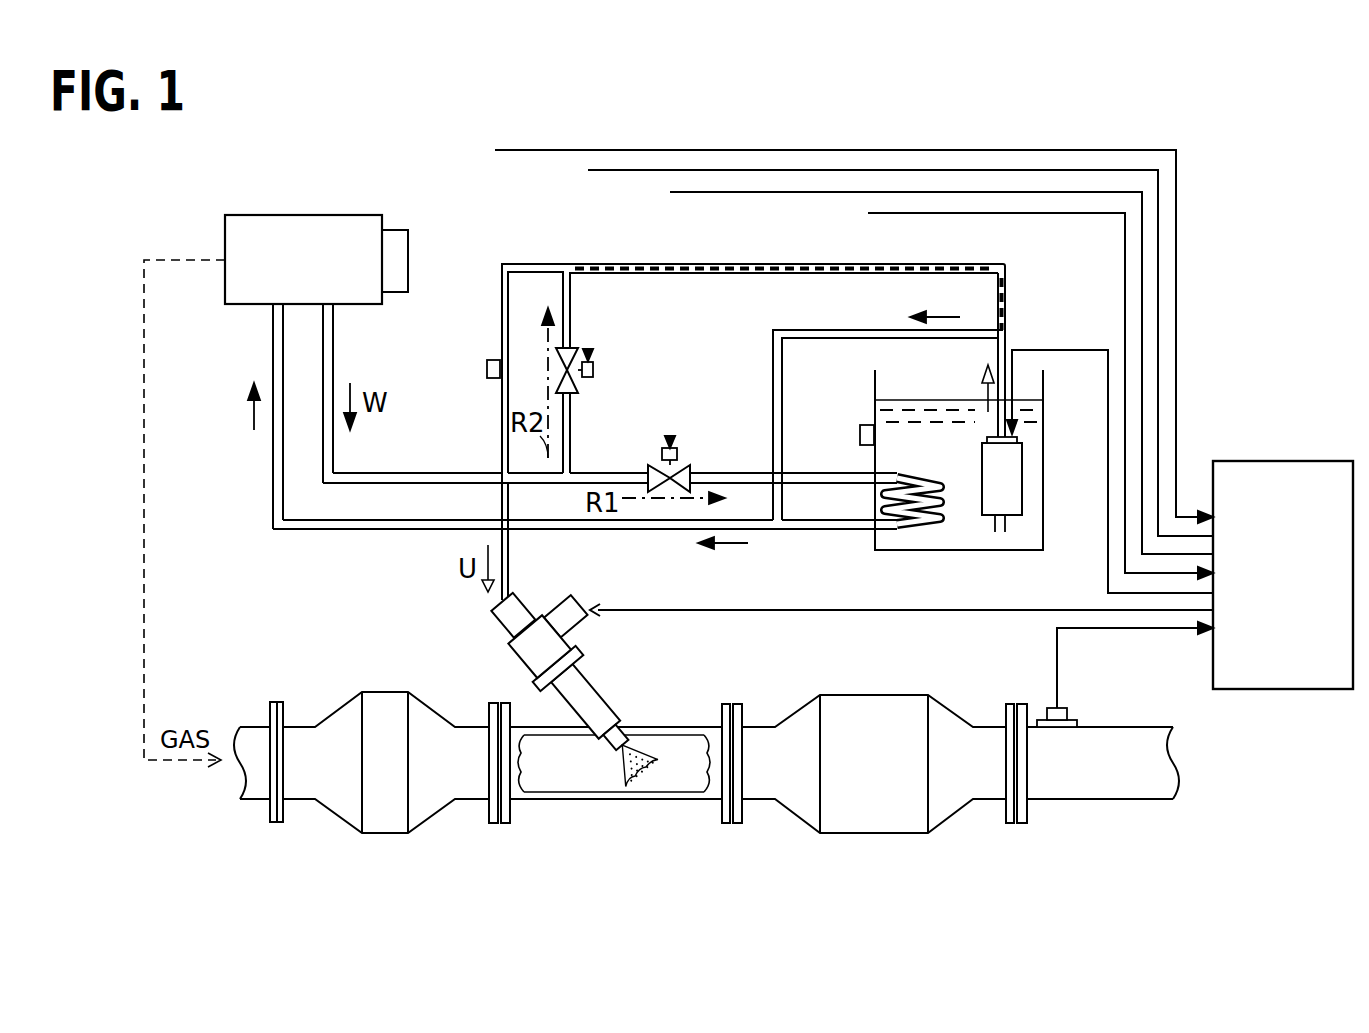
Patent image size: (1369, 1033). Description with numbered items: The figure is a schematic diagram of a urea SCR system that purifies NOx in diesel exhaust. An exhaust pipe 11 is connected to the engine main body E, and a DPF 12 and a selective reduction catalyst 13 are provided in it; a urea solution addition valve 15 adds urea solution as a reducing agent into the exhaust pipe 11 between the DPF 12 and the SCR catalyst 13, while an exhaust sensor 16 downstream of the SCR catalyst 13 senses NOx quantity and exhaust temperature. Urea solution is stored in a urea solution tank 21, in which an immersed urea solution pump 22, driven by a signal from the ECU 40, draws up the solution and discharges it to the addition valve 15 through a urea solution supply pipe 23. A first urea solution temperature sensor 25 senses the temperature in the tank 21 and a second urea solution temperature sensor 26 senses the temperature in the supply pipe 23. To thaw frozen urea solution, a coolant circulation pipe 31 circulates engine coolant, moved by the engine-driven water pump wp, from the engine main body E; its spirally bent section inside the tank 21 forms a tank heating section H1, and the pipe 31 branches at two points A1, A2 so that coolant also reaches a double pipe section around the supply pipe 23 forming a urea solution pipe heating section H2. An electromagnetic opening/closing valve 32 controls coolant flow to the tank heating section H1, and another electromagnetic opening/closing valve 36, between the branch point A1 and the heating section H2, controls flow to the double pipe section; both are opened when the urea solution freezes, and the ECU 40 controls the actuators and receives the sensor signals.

The exhaust pipe 11 is at (572, 798).
The DPF 12 is at (385, 692).
The selective reduction catalyst 13 is at (888, 695).
The urea solution addition valve 15 is at (535, 598).
The exhaust sensor 16 is at (1072, 710).
The urea solution tank 21 is at (1045, 438).
The urea solution pump 22 is at (1022, 492).
The urea solution supply pipe 23 is at (519, 265).
The first urea solution temperature sensor 25 is at (860, 435).
The second urea solution temperature sensor 26 is at (493, 358).
The coolant circulation pipe 31 is at (335, 333).
The electromagnetic opening/closing valve 32 is at (683, 466).
The electromagnetic opening/closing valve 36 is at (578, 378).
The ECU 40 is at (1281, 460).
The engine main body E is at (333, 215).
The water pump wp is at (392, 230).
The branch point A1 is at (575, 470).
The branch point A2 is at (784, 519).
The tank heating section H1 is at (922, 530).
The urea solution pipe heating section H2 is at (793, 263).